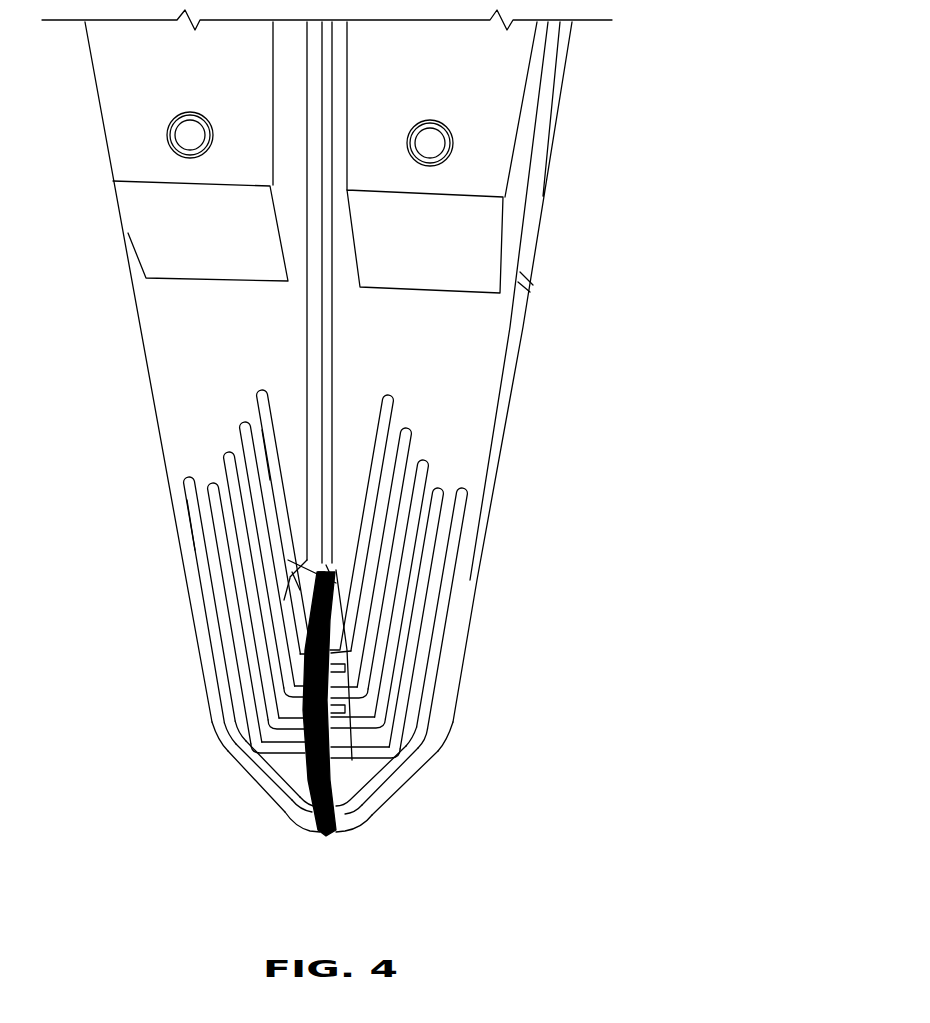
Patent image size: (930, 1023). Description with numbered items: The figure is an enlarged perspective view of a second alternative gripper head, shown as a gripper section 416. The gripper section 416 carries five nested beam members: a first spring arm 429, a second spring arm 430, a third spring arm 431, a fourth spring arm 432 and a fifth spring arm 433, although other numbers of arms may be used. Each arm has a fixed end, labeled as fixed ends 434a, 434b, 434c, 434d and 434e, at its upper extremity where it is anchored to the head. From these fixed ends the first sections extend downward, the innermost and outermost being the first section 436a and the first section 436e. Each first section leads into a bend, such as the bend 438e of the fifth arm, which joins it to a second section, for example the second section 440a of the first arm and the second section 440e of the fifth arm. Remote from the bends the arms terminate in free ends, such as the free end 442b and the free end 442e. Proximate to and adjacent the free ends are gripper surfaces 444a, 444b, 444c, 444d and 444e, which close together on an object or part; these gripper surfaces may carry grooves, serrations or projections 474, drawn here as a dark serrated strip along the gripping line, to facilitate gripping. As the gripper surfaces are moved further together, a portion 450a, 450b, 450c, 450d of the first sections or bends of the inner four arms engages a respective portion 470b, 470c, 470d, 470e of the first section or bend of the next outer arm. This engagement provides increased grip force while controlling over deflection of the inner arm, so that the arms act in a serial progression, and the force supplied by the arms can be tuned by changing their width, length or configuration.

The gripper section 416 is at (640, 251).
The first beam member or spring arm 429 is at (402, 456).
The second beam member or spring arm 430 is at (419, 482).
The third beam member or spring arm 431 is at (436, 522).
The fourth beam member or spring arm 432 is at (454, 557).
The fifth beam member or spring arm 433 is at (482, 592).
The fixed end 434a is at (252, 420).
The fixed end 434b is at (235, 447).
The fixed end 434c is at (218, 473).
The fixed end 434d is at (200, 493).
The fixed end 434e is at (172, 490).
The first section 436a is at (270, 487).
The first section 436e is at (187, 558).
The bend 438e is at (445, 700).
The second section 440a is at (283, 603).
The second section 440e is at (253, 773).
The free end 442b is at (233, 700).
The free end 442e is at (293, 820).
The gripper surface 444a is at (356, 625).
The gripper surface 444b is at (364, 656).
The gripper surface 444c is at (426, 748).
The gripper surface 444d is at (354, 802).
The gripper surface 444e is at (390, 809).
The portion of first section or bend 450a is at (285, 652).
The portion of first section or bend 450b is at (358, 668).
The portion of first section or bend 450c is at (355, 708).
The portion of first section or bend 450d is at (228, 716).
The portion of first section or bend 470b is at (262, 680).
The portion of first section or bend 470c is at (380, 680).
The portion of first section or bend 470d is at (365, 728).
The portion of first section or bend 470e is at (228, 746).
The grooves, serrations or projections 474 is at (322, 824).